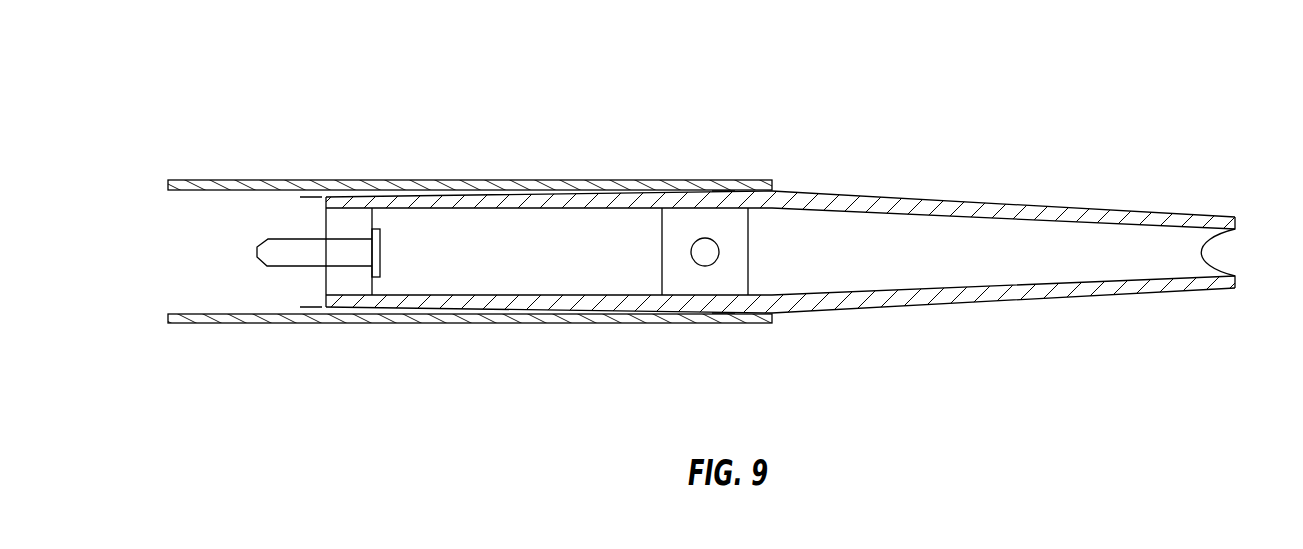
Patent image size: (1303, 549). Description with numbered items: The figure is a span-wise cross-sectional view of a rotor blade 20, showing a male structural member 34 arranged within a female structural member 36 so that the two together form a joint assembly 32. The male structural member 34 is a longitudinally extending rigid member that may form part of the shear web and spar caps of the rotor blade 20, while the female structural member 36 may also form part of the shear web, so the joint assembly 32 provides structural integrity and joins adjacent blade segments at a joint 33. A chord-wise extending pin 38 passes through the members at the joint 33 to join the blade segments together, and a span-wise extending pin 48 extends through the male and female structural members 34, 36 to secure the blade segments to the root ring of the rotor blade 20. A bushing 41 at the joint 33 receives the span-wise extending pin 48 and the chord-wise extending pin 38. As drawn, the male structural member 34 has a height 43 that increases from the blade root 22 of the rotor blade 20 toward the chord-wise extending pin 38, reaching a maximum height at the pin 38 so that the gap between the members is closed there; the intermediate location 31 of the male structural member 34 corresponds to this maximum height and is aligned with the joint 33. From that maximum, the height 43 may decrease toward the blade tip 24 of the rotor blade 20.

The rotor blade 20 is at (1093, 208).
The blade root 22 is at (360, 308).
The blade tip 24 is at (1228, 216).
The intermediate location 31 is at (683, 201).
The joint assembly 32 is at (765, 98).
The joint 33 is at (738, 189).
The male structural member 34 is at (513, 189).
The female structural member 36 is at (260, 181).
The chord-wise extending pin 38 is at (720, 253).
The bushing 41 is at (352, 218).
The height 43 is at (310, 367).
The span-wise extending pin 48 is at (288, 252).